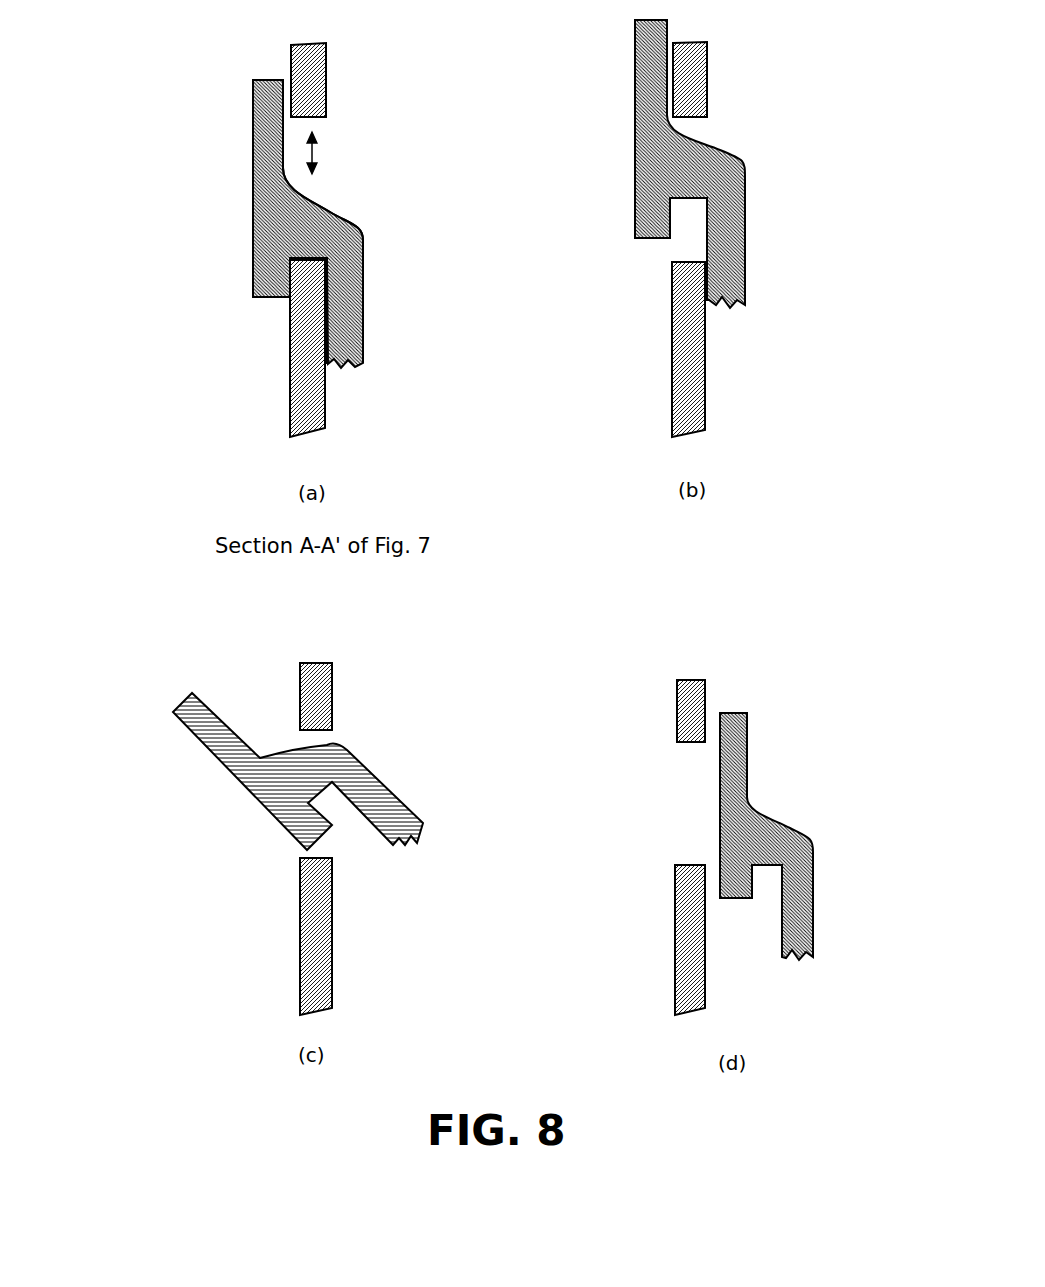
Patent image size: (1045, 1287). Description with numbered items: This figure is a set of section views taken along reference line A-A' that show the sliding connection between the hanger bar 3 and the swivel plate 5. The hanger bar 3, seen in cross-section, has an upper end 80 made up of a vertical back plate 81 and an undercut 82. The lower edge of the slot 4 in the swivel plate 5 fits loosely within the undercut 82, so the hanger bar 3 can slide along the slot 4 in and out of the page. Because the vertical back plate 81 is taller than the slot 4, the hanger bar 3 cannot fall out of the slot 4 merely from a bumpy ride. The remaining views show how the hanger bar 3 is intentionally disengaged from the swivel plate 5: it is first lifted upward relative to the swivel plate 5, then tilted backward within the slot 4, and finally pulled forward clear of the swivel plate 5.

The hanger bar 3 is at (345, 297).
The slot 4 is at (316, 152).
The swivel plate 5 is at (297, 422).
The upper end 80 is at (308, 224).
The vertical back plate 81 is at (270, 168).
The undercut 82 is at (320, 252).